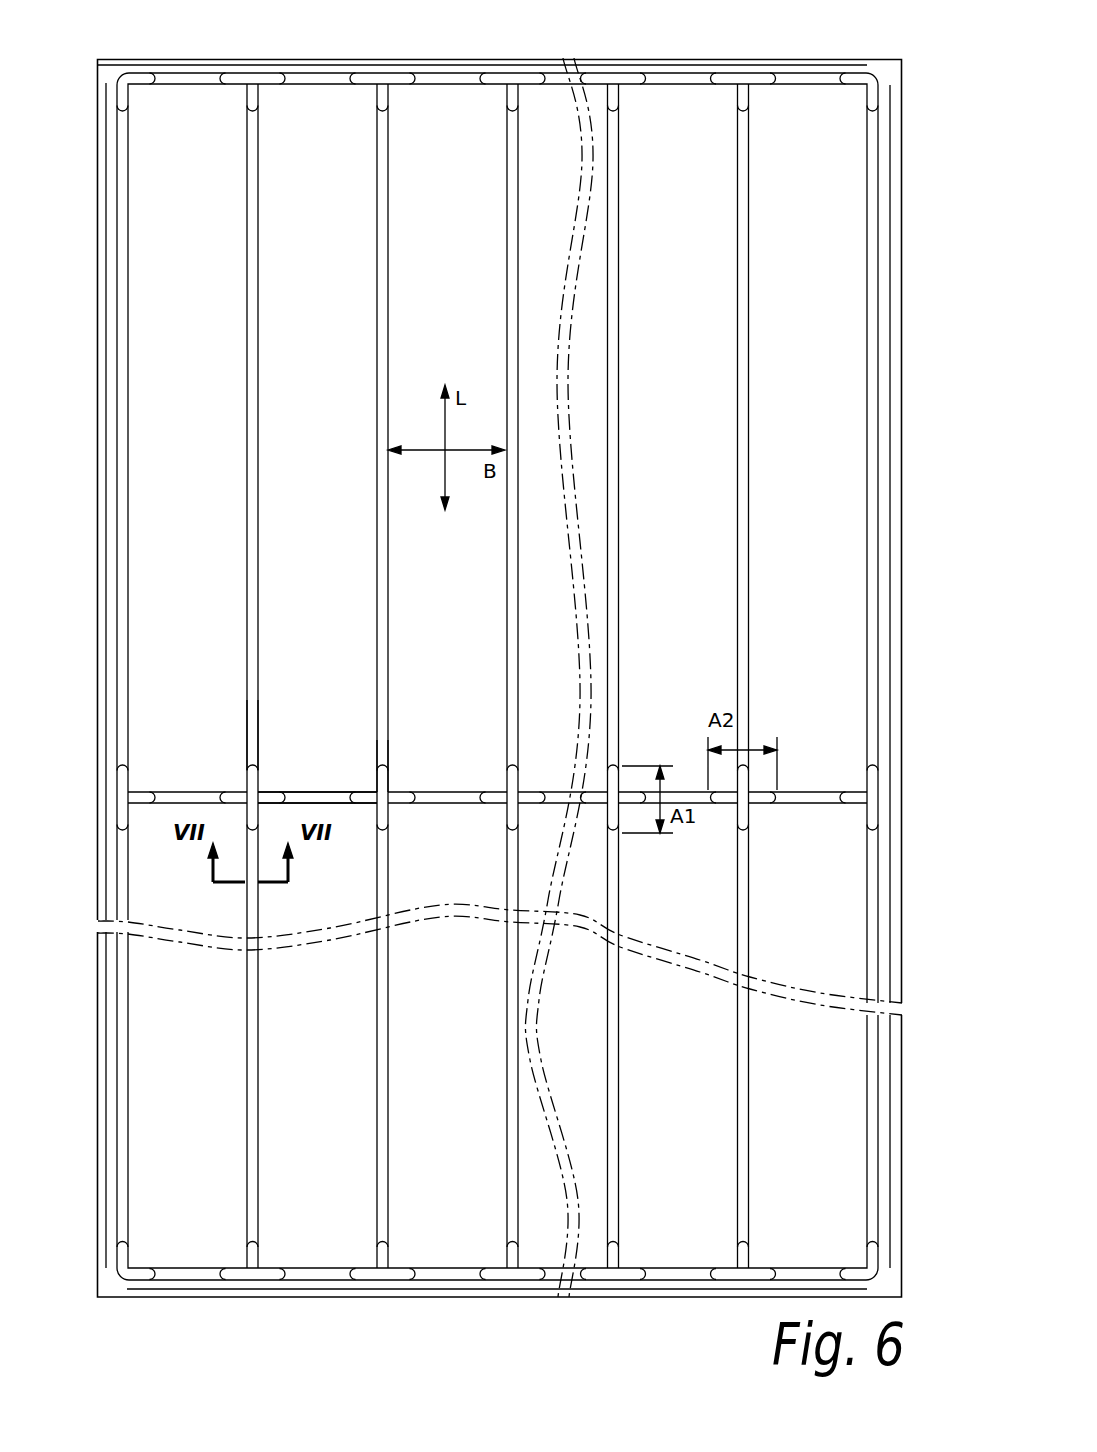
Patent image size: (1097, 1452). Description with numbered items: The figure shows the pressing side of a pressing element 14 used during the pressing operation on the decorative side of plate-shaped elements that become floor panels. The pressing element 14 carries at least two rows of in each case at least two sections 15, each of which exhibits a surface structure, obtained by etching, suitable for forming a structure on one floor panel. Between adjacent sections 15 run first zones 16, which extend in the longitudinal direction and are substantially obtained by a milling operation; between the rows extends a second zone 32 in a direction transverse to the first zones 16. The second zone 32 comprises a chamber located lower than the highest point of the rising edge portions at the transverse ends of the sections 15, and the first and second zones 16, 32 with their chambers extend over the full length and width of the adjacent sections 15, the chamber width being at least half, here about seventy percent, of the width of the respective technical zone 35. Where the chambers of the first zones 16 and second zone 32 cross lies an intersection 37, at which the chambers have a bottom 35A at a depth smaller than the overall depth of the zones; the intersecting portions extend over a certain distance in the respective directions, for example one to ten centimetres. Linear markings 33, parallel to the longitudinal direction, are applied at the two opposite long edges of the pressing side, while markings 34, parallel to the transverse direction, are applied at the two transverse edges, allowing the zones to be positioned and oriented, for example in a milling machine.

The pressing element 14 is at (822, 60).
The sections 15 is at (180, 200).
The first zone 16 is at (253, 293).
The second zone 32 is at (172, 797).
The markings 33 is at (108, 190).
The markings 34 is at (672, 66).
The zone 35 is at (252, 700).
The bottom 35A is at (380, 770).
The intersection 37 is at (137, 77).